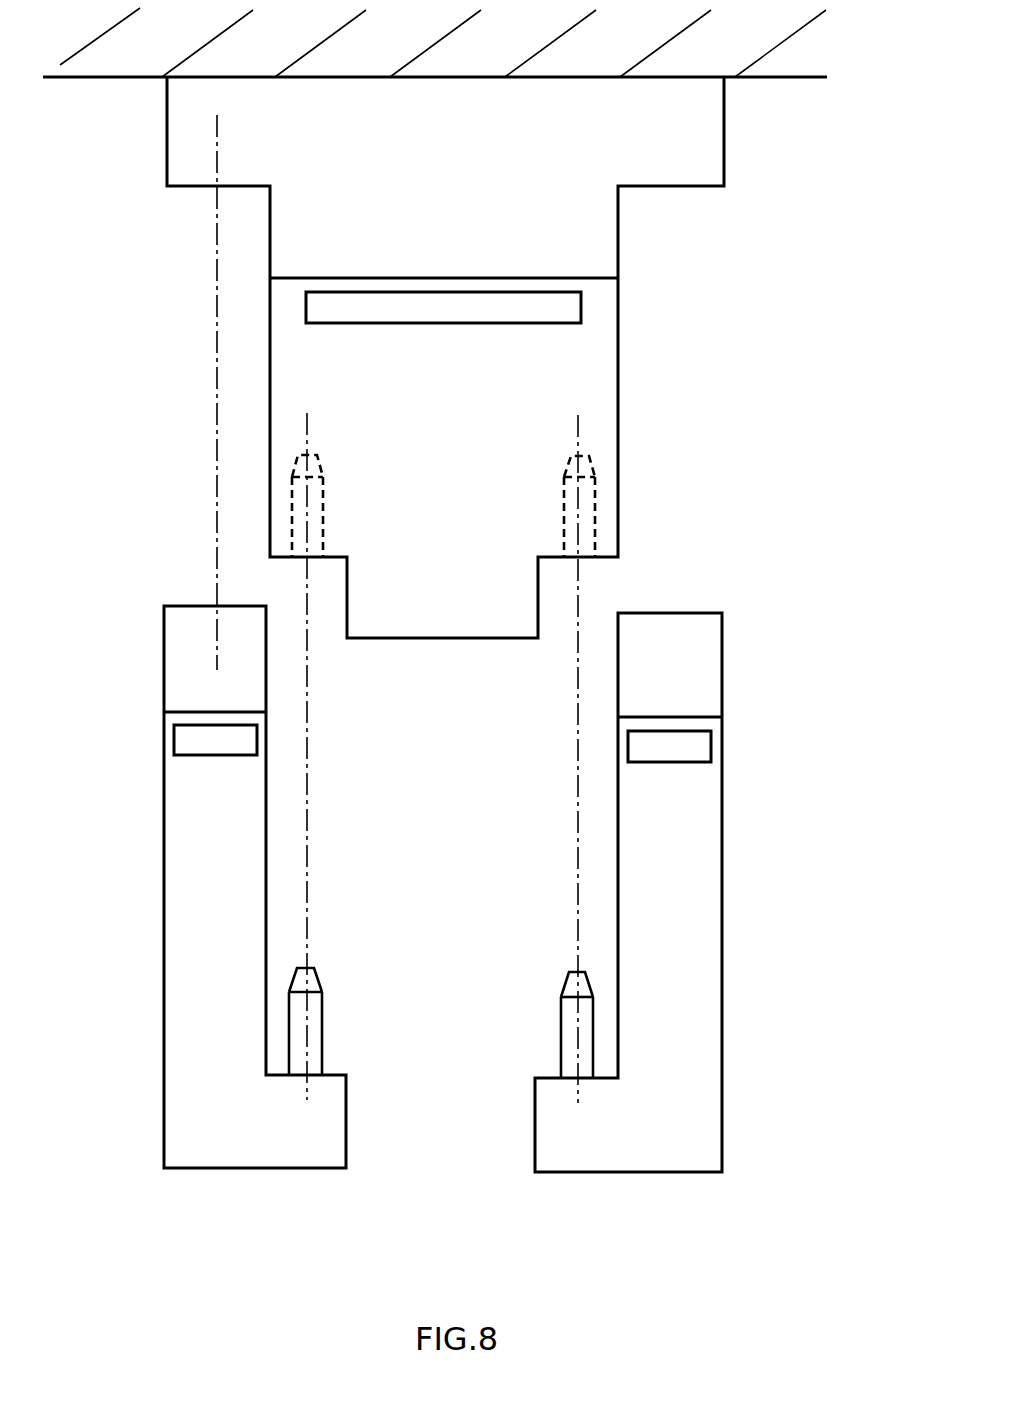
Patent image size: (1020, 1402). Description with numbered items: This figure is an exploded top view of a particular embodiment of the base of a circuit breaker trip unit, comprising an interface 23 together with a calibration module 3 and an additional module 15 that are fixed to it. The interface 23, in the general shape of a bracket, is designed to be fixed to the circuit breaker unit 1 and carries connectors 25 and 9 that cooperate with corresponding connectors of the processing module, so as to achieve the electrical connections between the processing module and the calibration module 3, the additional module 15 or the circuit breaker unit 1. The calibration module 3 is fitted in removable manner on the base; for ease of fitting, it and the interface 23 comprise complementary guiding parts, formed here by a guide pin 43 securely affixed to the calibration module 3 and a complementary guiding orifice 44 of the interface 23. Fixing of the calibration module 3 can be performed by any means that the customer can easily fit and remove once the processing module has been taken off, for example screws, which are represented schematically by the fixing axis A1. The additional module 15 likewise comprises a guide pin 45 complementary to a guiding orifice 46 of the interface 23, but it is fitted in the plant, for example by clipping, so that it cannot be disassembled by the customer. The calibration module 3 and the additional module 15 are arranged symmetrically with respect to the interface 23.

The circuit breaker unit 1 is at (460, 72).
The calibration module 3 is at (204, 887).
The connector 9 is at (491, 327).
The additional module 15 is at (677, 892).
The interface 23 is at (445, 357).
The connector 25 is at (441, 749).
The guide pin 43 is at (351, 1024).
The guiding orifice 44 is at (354, 756).
The guide pin 45 is at (530, 1025).
The guiding orifice 46 is at (533, 759).
The fixing axis A1 is at (168, 392).